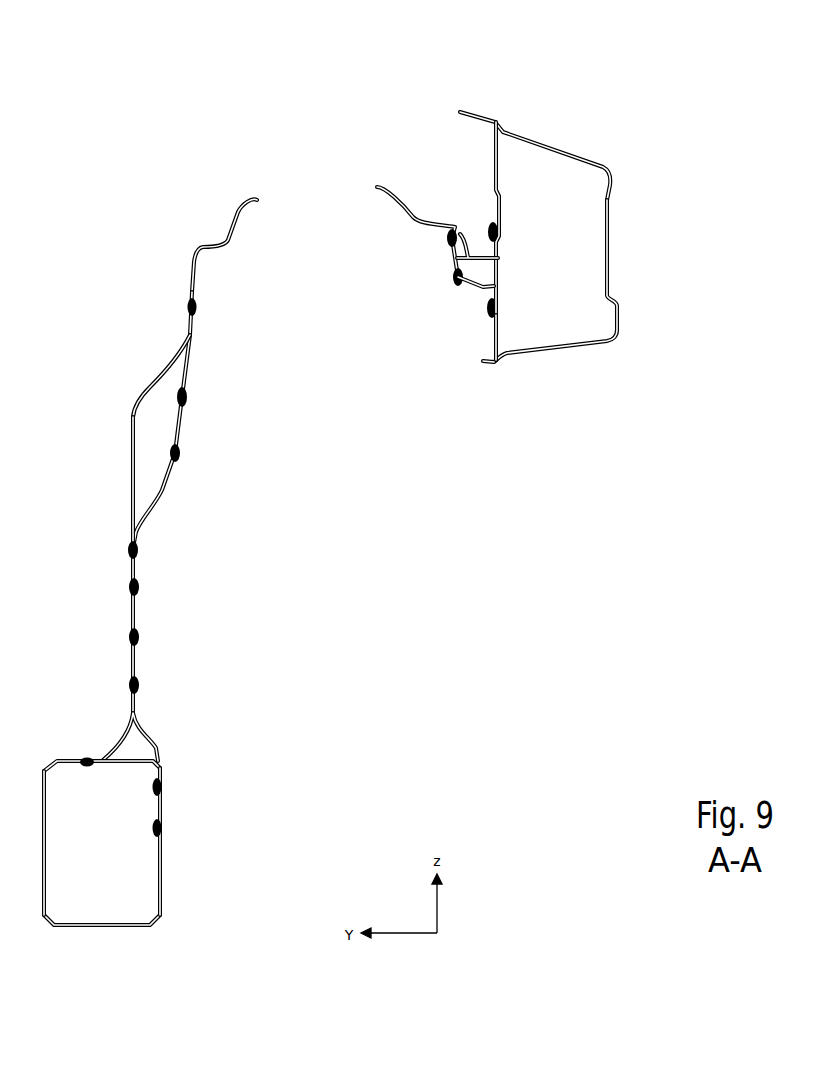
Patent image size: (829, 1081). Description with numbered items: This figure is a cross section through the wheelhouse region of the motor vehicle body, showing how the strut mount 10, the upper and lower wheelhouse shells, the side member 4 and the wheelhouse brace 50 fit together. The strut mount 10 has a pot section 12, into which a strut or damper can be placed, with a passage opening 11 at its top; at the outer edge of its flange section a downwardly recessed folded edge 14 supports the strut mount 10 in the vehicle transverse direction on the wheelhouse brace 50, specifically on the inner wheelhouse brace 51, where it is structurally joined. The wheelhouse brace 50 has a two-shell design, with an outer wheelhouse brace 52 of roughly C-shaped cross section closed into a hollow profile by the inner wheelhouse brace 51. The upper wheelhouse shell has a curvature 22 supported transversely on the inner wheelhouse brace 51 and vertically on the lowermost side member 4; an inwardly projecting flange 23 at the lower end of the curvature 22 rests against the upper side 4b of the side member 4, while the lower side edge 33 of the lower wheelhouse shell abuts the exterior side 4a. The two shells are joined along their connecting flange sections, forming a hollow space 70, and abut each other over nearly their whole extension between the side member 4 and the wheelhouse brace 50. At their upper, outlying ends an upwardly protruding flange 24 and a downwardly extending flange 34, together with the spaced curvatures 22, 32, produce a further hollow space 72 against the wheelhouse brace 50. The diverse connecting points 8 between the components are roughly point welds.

The side member 4 is at (140, 888).
The exterior side 4a is at (159, 858).
The upper side 4b is at (57, 760).
The connecting points 8 is at (185, 397).
The strut mount 10 is at (261, 193).
The passage opening 11 is at (325, 193).
The pot section 12 is at (233, 227).
The folded edge 14 is at (490, 320).
The curvature 22 is at (150, 388).
The flange 23 is at (103, 760).
The upwardly protruding flange 24 is at (491, 228).
The curvature 32 is at (163, 490).
The lower side edge 33 is at (160, 767).
The downwardly extending flange 34 is at (495, 287).
The wheelhouse brace 50 is at (558, 122).
The inner wheelhouse brace 51 is at (496, 175).
The outer wheelhouse brace 52 is at (608, 243).
The hollow space 70 is at (148, 443).
The hollow space 72 is at (477, 272).